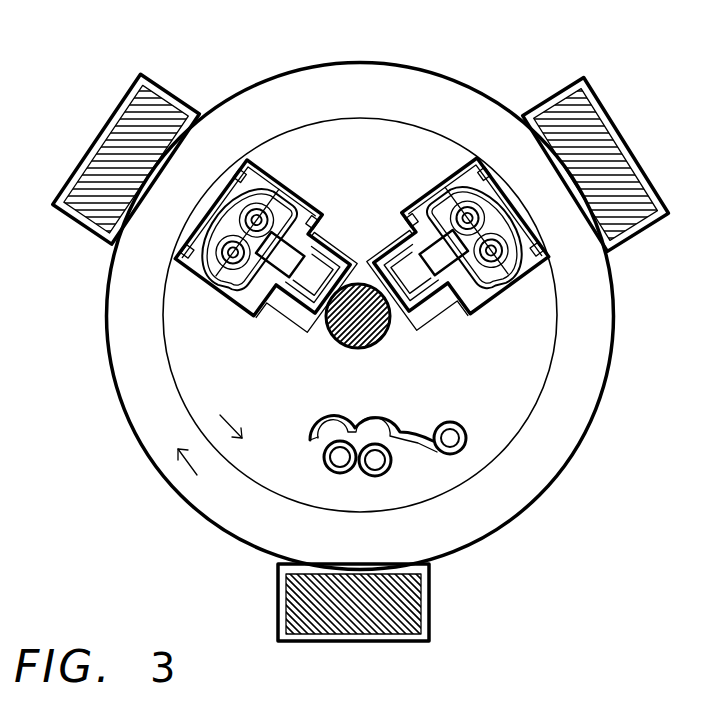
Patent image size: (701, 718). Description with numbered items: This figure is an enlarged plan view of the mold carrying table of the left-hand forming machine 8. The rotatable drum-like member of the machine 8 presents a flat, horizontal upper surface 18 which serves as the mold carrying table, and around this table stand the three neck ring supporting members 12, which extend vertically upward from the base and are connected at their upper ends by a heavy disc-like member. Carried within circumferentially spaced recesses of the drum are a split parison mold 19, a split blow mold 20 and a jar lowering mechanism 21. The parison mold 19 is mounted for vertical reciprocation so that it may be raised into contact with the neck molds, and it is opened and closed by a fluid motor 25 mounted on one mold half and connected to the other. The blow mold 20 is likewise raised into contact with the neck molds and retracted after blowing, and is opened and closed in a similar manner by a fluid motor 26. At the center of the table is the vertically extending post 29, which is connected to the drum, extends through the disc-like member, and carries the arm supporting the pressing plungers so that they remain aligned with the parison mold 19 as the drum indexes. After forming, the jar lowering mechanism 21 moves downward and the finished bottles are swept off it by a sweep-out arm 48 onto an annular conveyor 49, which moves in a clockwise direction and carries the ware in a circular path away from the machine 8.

The forming machine 8 is at (444, 54).
The neck ring supporting member 12 is at (612, 153).
The flat horizontal upper surface 18 is at (262, 399).
The split parison mold 19 is at (474, 182).
The split blow mold 20 is at (276, 206).
The jar lowering mechanism 21 is at (334, 471).
The fluid motor 25 is at (413, 278).
The fluid motor 26 is at (292, 268).
The vertically extending post 29 is at (333, 345).
The sweep-out arm 48 is at (423, 425).
The annular conveyor 49 is at (147, 422).